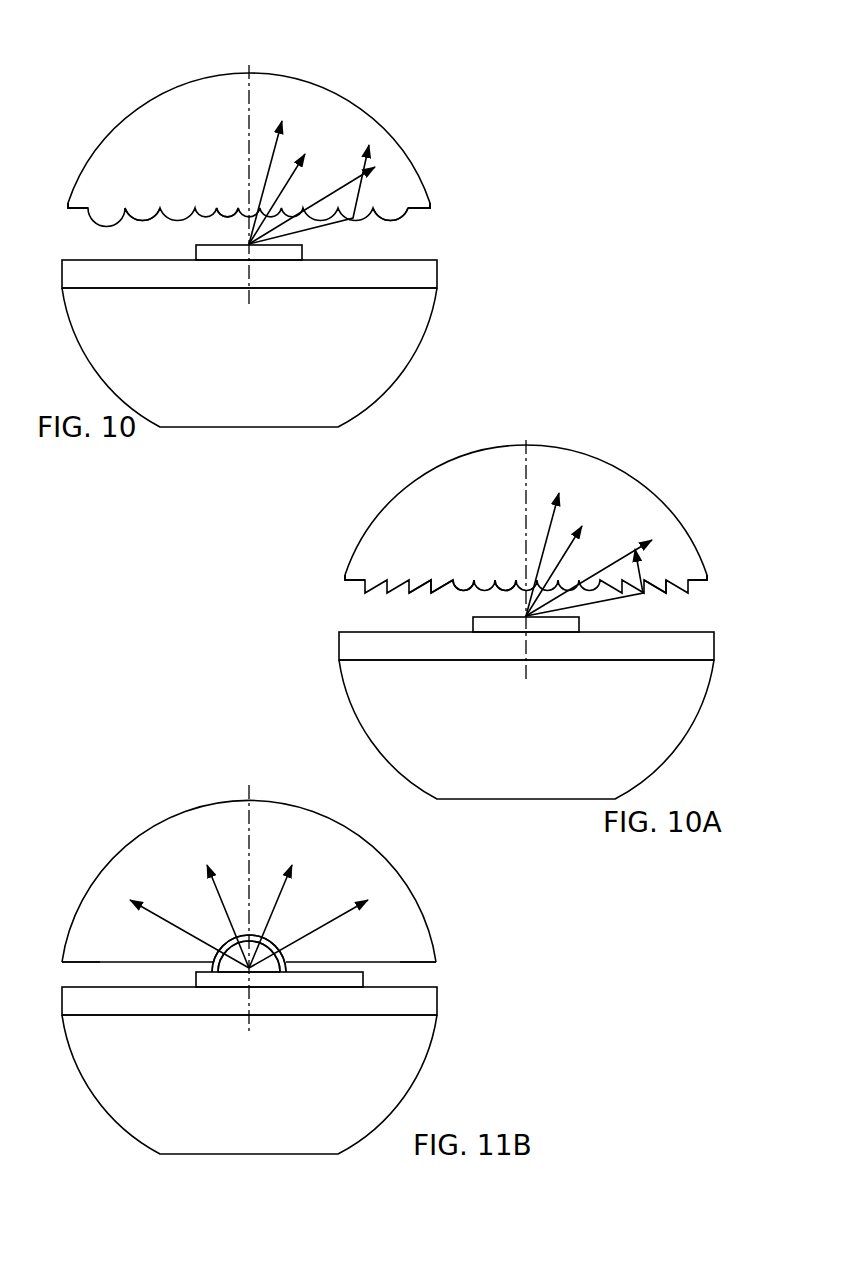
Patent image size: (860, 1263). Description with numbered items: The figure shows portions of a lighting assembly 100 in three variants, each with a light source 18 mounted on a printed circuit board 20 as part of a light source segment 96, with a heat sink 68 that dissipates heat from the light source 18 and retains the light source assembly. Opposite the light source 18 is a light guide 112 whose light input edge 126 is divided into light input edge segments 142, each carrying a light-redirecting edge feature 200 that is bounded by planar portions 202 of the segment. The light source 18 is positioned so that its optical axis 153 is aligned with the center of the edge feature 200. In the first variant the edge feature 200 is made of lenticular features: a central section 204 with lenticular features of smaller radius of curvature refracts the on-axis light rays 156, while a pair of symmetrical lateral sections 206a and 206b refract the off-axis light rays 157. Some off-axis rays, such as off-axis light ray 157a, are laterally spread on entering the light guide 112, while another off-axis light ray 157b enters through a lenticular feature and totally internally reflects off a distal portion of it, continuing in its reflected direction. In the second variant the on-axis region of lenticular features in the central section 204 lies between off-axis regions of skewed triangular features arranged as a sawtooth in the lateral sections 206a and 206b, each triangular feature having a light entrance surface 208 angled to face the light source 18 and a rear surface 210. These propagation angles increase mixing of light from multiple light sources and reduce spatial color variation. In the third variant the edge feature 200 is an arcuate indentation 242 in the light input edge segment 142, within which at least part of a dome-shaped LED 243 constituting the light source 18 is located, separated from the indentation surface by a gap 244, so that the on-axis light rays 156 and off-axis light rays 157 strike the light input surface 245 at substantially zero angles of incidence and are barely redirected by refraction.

In FIG. 10, the lighting assembly 100 is at (120, 88).
In FIG. 10A, the lighting assembly 100 is at (529, 590).
In FIG. 11B, the lighting assembly 100 is at (253, 944).
In FIG. 10, the light guide 112 is at (158, 108).
In FIG. 10A, the light guide 112 is at (526, 494).
In FIG. 11B, the light guide 112 is at (249, 881).
In FIG. 10, the optical axis 153 is at (249, 62).
In FIG. 10A, the optical axis 153 is at (494, 535).
In FIG. 11B, the optical axis 153 is at (218, 889).
In FIG. 10, the light-redirecting edge feature 200 is at (130, 188).
In FIG. 10A, the light-redirecting edge feature 200 is at (526, 535).
In FIG. 11B, the light-redirecting edge feature 200 is at (230, 912).
In FIG. 10, the central on-axis section 204 is at (238, 205).
In FIG. 10A, the central on-axis section 204 is at (500, 536).
In FIG. 10, the lateral off-axis section 206a is at (150, 207).
In FIG. 10A, the lateral off-axis section 206a is at (411, 550).
In FIG. 10, the lateral off-axis section 206b is at (389, 197).
In FIG. 10A, the lateral off-axis section 206b is at (692, 539).
In FIG. 10A, the light entrance surface 208 is at (472, 555).
In FIG. 10A, the rear surface 210 is at (442, 556).
In FIG. 10, the planar portion 202 is at (86, 207).
In FIG. 10A, the planar portion 202 is at (531, 564).
In FIG. 11B, the planar portion 202 is at (250, 932).
In FIG. 10, the light input edge segment 142 is at (72, 208).
In FIG. 10A, the light input edge segment 142 is at (331, 608).
In FIG. 11B, the light input edge segment 142 is at (60, 975).
In FIG. 10, the light input edge 126 is at (428, 210).
In FIG. 10A, the light input edge 126 is at (725, 607).
In FIG. 11B, the light input edge 126 is at (443, 974).
In FIG. 10, the on-axis light rays 156 is at (281, 143).
In FIG. 10A, the on-axis light rays 156 is at (571, 513).
In FIG. 11B, the on-axis light rays 156 is at (247, 865).
In FIG. 11B, the off-axis light rays 157 is at (241, 873).
In FIG. 10, the off-axis light ray 157a is at (358, 199).
In FIG. 10A, the off-axis light ray 157a is at (599, 521).
In FIG. 10, the off-axis light ray 157b is at (364, 203).
In FIG. 10A, the off-axis light ray 157b is at (618, 531).
In FIG. 10, the light source 18 is at (280, 255).
In FIG. 10A, the light source 18 is at (526, 658).
In FIG. 11B, the light source 18 is at (279, 1010).
In FIG. 10, the light source segment 96 is at (172, 277).
In FIG. 10A, the light source segment 96 is at (526, 677).
In FIG. 11B, the light source segment 96 is at (249, 1030).
In FIG. 10, the printed circuit board 20 is at (328, 277).
In FIG. 10A, the printed circuit board 20 is at (526, 686).
In FIG. 11B, the printed circuit board 20 is at (249, 1038).
In FIG. 10, the heat sink 68 is at (415, 307).
In FIG. 10A, the heat sink 68 is at (545, 729).
In FIG. 11B, the heat sink 68 is at (269, 1084).
In FIG. 11B, the indentation 242 is at (297, 953).
In FIG. 11B, the dome-shaped LED 243 is at (241, 1010).
In FIG. 11B, the gap 244 is at (202, 952).
In FIG. 11B, the light input surface 245 is at (251, 894).